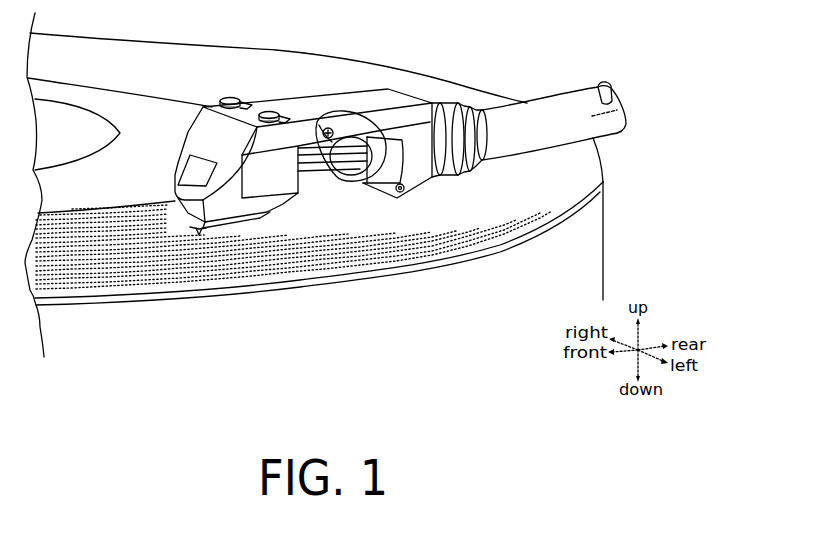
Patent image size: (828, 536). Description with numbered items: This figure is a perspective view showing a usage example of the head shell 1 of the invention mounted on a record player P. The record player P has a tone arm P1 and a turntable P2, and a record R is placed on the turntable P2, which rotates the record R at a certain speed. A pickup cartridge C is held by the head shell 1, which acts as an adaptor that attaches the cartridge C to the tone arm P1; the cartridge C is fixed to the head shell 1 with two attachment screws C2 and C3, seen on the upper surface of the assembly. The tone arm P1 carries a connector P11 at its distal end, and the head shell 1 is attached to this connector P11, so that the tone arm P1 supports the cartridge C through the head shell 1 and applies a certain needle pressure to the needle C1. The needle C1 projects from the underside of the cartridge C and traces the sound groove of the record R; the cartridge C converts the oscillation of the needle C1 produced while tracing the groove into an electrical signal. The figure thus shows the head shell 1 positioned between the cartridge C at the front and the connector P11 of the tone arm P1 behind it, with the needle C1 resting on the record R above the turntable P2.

The record R is at (390, 82).
The record player P is at (612, 51).
The tone arm P1 is at (593, 115).
The connector P11 is at (453, 100).
The turntable P2 is at (607, 245).
The head shell 1 is at (397, 200).
The pickup cartridge C is at (255, 184).
The needle C1 is at (200, 234).
The attachment screw C2 is at (232, 95).
The attachment screw C3 is at (269, 110).